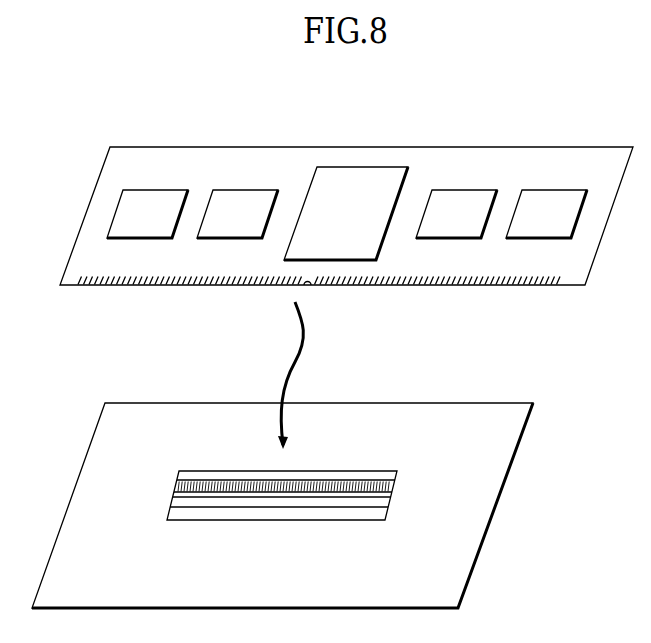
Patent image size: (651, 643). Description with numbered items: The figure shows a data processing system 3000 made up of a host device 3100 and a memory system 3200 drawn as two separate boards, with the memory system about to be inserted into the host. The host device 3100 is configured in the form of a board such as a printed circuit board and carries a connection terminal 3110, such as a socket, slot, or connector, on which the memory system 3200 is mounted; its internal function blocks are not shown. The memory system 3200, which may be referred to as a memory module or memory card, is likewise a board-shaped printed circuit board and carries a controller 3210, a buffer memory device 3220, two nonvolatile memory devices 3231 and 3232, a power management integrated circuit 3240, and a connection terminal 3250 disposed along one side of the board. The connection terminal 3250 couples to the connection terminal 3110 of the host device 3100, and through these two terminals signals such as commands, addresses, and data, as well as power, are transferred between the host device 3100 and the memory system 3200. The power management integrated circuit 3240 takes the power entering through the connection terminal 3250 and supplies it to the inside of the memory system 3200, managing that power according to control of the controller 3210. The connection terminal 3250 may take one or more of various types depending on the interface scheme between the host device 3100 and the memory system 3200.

The data processing system 3000 is at (205, 114).
The host device 3100 is at (282, 505).
The connection terminal 3110 is at (417, 462).
The memory system 3200 is at (346, 237).
The controller 3210 is at (346, 213).
The buffer memory device 3220 is at (237, 214).
The nonvolatile memory device 3231 is at (456, 214).
The nonvolatile memory device 3232 is at (546, 214).
The power management integrated circuit 3240 is at (147, 214).
The connection terminal 3250 is at (93, 286).